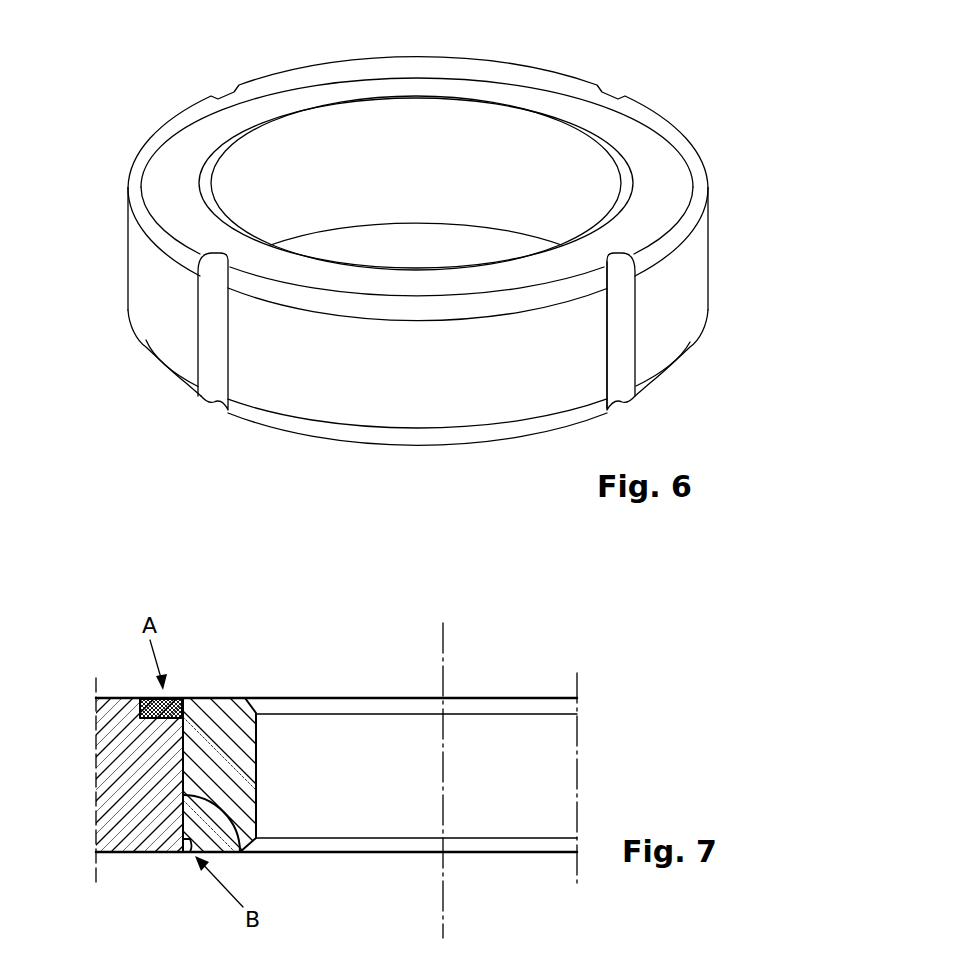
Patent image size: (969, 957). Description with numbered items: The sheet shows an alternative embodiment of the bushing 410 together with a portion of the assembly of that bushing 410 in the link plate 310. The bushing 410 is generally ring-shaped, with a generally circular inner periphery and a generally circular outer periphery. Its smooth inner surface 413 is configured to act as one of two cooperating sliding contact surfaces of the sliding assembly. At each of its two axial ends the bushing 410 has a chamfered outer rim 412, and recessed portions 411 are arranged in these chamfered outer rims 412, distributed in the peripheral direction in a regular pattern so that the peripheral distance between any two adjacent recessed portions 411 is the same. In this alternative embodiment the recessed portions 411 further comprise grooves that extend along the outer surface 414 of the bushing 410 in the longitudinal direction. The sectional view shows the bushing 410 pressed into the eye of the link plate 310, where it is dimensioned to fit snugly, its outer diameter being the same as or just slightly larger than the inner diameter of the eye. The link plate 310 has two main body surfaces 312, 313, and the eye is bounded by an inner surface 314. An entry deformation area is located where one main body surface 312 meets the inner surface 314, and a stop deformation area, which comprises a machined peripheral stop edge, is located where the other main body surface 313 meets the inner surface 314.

In FIG. 6, the bushing 410 is at (577, 98).
In FIG. 7, the bushing 410 is at (225, 720).
In FIG. 6, the recessed portions 411 is at (615, 283).
In FIG. 6, the chamfered outer rims 412 is at (692, 202).
In FIG. 7, the chamfered outer rims 412 is at (183, 700).
In FIG. 6, the inner surface 413 is at (587, 177).
In FIG. 6, the outer surface 414 is at (688, 305).
In FIG. 7, the outer surface 414 is at (183, 778).
In FIG. 7, the link plate 310 is at (129, 832).
In FIG. 7, the main body surface 312 is at (127, 698).
In FIG. 7, the main body surface 313 is at (157, 857).
In FIG. 7, the inner surface of the eye 314 is at (240, 852).